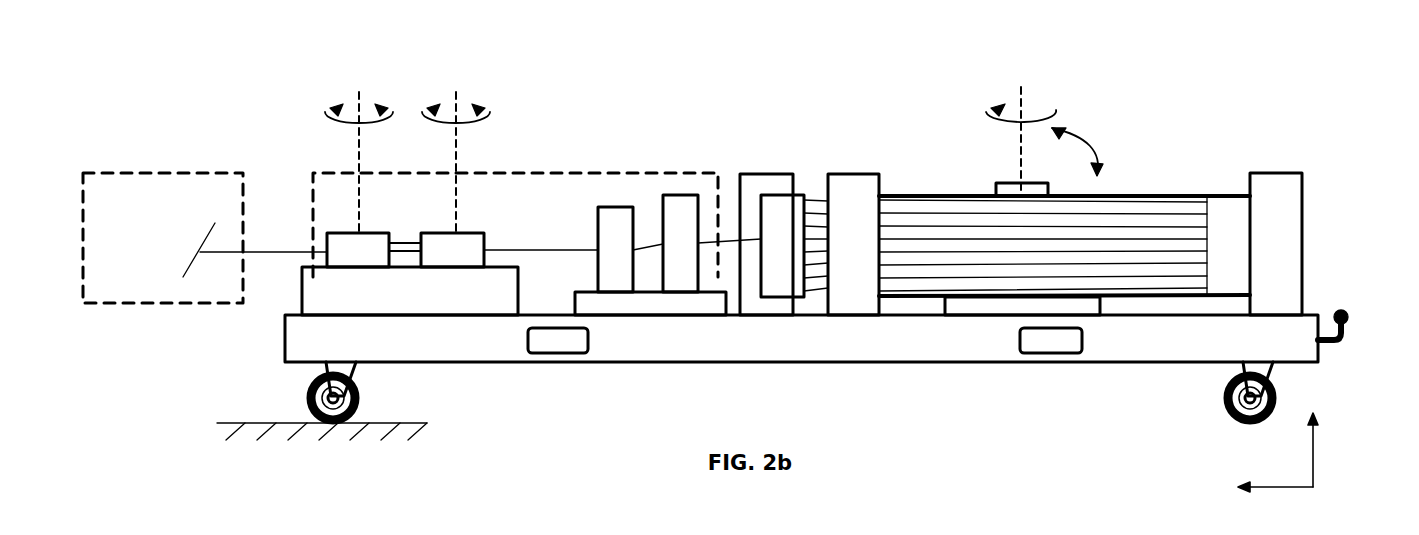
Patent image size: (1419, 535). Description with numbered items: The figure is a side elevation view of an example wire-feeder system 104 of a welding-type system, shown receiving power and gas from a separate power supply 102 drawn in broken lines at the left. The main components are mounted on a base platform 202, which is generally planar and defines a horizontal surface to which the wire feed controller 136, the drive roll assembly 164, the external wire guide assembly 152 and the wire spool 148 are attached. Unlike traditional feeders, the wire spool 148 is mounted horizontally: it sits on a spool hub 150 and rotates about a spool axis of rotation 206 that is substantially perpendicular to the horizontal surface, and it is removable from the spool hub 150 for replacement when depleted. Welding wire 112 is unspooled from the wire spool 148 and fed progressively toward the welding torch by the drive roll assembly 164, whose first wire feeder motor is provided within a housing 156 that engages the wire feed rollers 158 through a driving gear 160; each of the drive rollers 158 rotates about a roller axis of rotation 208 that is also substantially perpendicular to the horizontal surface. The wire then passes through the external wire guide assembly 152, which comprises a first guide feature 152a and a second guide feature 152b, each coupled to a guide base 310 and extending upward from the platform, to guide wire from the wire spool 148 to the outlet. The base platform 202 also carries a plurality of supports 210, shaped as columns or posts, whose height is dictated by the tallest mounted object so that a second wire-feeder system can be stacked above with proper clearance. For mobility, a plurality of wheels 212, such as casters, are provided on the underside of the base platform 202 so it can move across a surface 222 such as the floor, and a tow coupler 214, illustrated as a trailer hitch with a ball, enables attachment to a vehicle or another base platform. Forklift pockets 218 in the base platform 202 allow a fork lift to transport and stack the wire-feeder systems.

The power supply 102 is at (172, 172).
The wire-feeder system 104 is at (1205, 80).
The welding wire 112 is at (265, 252).
The wire feed controller 136 is at (538, 172).
The wire spool 148 is at (1143, 196).
The spool hub 150 is at (1040, 183).
The external wire guide assembly 152 is at (680, 97).
The first guide feature 152a is at (688, 195).
The second guide feature 152b is at (617, 207).
The housing 156 is at (302, 296).
The wire feed rollers 158 is at (357, 268).
The driving gear 160 is at (405, 243).
The drive roll assembly 164 is at (312, 144).
The base platform 202 is at (1047, 363).
The spool axis of rotation 206 is at (1023, 100).
The roller axis of rotation 208 is at (362, 95).
The supports 210 is at (765, 173).
The wheels 212 is at (360, 400).
The tow coupler 214 is at (1346, 312).
The forklift pockets 218 is at (590, 342).
The surface 222 is at (257, 422).
The guide base 310 is at (575, 300).